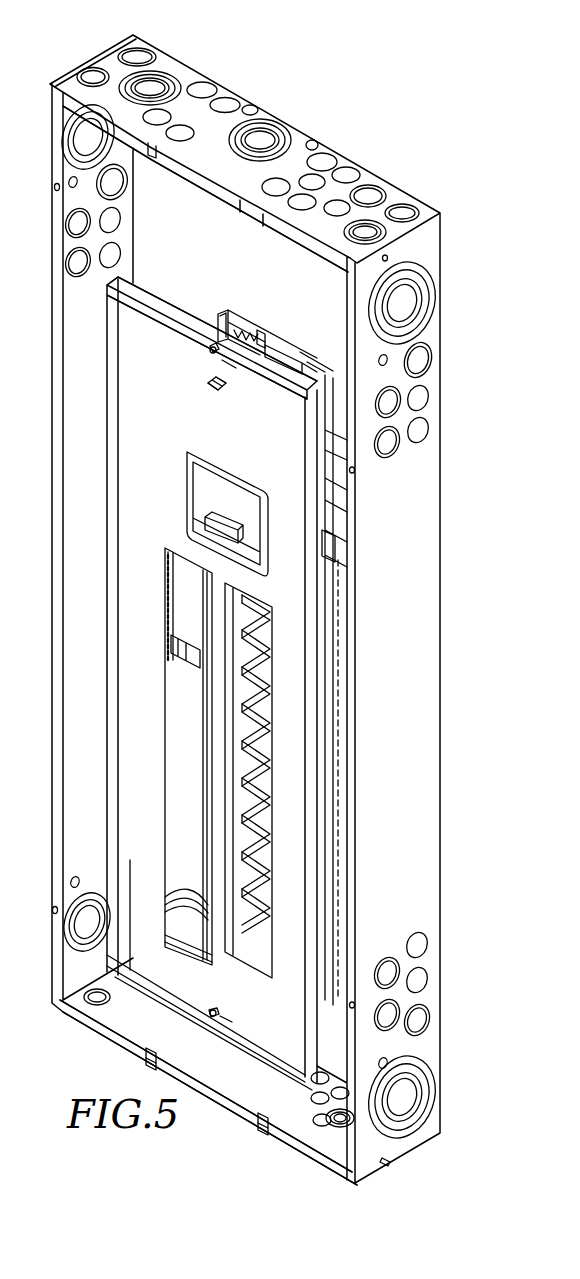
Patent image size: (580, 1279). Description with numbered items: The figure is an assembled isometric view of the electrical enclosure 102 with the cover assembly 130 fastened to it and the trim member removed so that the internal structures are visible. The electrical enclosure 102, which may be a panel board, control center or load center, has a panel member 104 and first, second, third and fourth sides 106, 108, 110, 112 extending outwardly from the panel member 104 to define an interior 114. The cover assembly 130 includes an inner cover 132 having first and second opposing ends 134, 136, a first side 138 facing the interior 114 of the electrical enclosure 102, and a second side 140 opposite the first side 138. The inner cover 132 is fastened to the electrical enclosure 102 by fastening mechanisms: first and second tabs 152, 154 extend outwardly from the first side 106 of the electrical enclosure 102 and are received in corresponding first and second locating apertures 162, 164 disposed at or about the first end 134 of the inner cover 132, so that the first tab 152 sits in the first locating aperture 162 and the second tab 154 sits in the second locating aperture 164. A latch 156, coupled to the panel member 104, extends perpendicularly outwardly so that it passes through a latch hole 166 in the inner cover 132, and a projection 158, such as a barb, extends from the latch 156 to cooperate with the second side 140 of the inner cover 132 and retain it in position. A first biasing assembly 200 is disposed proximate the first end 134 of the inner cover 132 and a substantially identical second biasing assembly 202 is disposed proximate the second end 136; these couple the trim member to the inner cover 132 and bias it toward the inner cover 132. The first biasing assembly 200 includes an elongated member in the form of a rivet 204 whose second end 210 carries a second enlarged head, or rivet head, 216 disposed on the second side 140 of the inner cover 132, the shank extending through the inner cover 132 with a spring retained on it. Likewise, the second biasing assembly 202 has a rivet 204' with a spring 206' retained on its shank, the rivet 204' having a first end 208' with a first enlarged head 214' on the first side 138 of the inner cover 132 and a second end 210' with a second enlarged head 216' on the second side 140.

The electrical enclosure 102 is at (202, 1173).
The panel member 104 is at (216, 207).
The first side 106 is at (87, 1010).
The second side 108 is at (210, 85).
The third side 110 is at (97, 317).
The fourth side 112 is at (422, 544).
The interior 114 is at (152, 146).
The cover assembly 130 is at (67, 347).
The inner cover 132 is at (169, 515).
The first end 134 is at (357, 1153).
The second end 136 is at (323, 410).
The first side 138 is at (150, 296).
The second side 140 is at (150, 318).
The first tab 152 is at (147, 1062).
The second tab 154 is at (257, 1126).
The latch 156 is at (264, 342).
The projection 158 is at (213, 391).
The first locating aperture 162 is at (148, 1047).
The second locating aperture 164 is at (262, 1110).
The latch hole 166 is at (227, 388).
The first biasing assembly 200 is at (212, 1027).
The second biasing assembly 202 is at (243, 312).
The elongated member 204 is at (207, 995).
The rivet 204' is at (176, 338).
The spring 206' is at (222, 310).
The spring 208' is at (265, 295).
The second end 210 is at (262, 1024).
The latch slot 210' is at (260, 389).
The latch block 214' is at (287, 312).
The second enlarged head 216 is at (184, 990).
The pin 216' is at (183, 359).